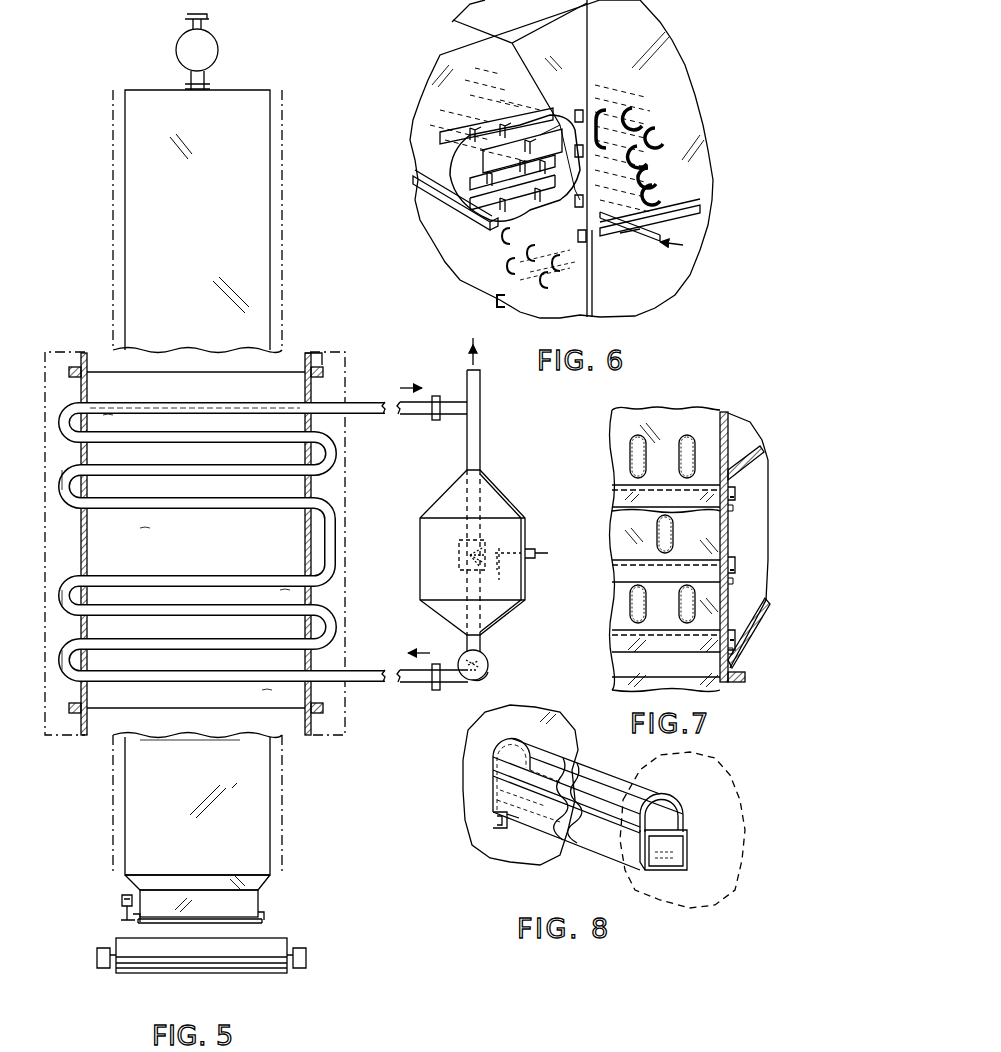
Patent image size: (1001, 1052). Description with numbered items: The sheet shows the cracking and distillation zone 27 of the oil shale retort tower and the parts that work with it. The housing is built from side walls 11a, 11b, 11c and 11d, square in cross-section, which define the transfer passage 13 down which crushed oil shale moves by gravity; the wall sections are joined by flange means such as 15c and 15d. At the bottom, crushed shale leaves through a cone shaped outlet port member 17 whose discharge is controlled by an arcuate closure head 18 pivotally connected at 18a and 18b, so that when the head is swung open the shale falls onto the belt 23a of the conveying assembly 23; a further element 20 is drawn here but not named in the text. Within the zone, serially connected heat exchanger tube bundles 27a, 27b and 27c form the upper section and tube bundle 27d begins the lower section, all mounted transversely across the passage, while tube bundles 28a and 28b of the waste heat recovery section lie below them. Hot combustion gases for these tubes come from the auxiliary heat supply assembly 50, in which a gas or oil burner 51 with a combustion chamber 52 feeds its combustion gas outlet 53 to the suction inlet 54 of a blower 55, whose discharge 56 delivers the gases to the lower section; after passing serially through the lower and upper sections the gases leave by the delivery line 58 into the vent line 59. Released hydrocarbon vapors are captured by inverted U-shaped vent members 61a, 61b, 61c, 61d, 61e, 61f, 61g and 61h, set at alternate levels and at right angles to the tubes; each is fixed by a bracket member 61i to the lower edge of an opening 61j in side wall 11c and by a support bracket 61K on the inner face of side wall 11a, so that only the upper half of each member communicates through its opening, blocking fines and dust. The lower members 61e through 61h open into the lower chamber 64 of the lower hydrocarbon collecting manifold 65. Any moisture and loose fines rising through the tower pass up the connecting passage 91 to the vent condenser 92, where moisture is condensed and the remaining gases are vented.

In FIG. 5, the side wall 11a is at (138, 178).
In FIG. 8, the side wall 11a is at (476, 762).
In FIG. 5, the side wall 11b is at (86, 540).
In FIG. 6, the side wall 11b is at (650, 270).
In FIG. 7, the side wall 11b is at (672, 413).
In FIG. 5, the side wall 11c is at (309, 353).
In FIG. 6, the side wall 11c is at (550, 300).
In FIG. 7, the side wall 11c is at (733, 422).
In FIG. 8, the side wall 11c is at (708, 770).
In FIG. 5, the side wall 11d is at (322, 353).
In FIG. 6, the side wall 11d is at (568, 125).
In FIG. 5, the transfer passage 13 is at (148, 738).
In FIG. 5, the flange means 15c is at (72, 363).
In FIG. 5, the flange means 15d is at (74, 714).
In FIG. 6, the flange means 15d is at (700, 220).
In FIG. 5, the outlet port member 17 is at (244, 904).
In FIG. 5, the closure head 18 is at (202, 922).
In FIG. 5, the pivotal connection 18a is at (128, 920).
In FIG. 5, the pivotal connection 18b is at (264, 917).
In FIG. 5, the clamp 20 is at (110, 912).
In FIG. 5, the conveying assembly 23 is at (282, 935).
In FIG. 5, the belt 23a is at (152, 965).
In FIG. 5, the cracking and distillation zone 27 is at (372, 365).
In FIG. 5, the heat exchanger tube bundle 27a is at (132, 405).
In FIG. 5, the heat exchanger tube bundle 27b is at (63, 484).
In FIG. 5, the heat exchanger tube bundle 27c is at (65, 580).
In FIG. 7, the heat exchanger tube bundle 27c is at (630, 448).
In FIG. 5, the heat exchanger tube bundle 27d is at (63, 676).
In FIG. 6, the heat exchanger tube bundle 27d is at (655, 174).
In FIG. 7, the heat exchanger tube bundle 27d is at (630, 608).
In FIG. 6, the heat exchange tube bundle 28a is at (503, 238).
In FIG. 6, the heat exchange tube bundle 28b is at (506, 282).
In FIG. 5, the auxiliary heat supply assembly 50 is at (500, 482).
In FIG. 5, the gas or oil burner 51 is at (486, 547).
In FIG. 5, the combustion chamber 52 is at (480, 565).
In FIG. 5, the combustion gas outlet 53 is at (500, 630).
In FIG. 5, the suction inlet 54 is at (490, 656).
In FIG. 5, the blower 55 is at (481, 680).
In FIG. 5, the discharge 56 is at (452, 683).
In FIG. 5, the delivery line 58 is at (422, 415).
In FIG. 5, the vent line 59 is at (480, 389).
In FIG. 5, the U-shaped vent member 61a is at (197, 428).
In FIG. 5, the U-shaped vent member 61b is at (197, 460).
In FIG. 5, the U-shaped vent member 61c is at (229, 492).
In FIG. 5, the U-shaped vent member 61d is at (228, 521).
In FIG. 5, the U-shaped vent member 61e is at (174, 591).
In FIG. 6, the U-shaped vent member 61e is at (540, 128).
In FIG. 7, the U-shaped vent member 61e is at (615, 497).
In FIG. 5, the U-shaped vent member 61f is at (178, 623).
In FIG. 6, the U-shaped vent member 61f is at (512, 139).
In FIG. 5, the U-shaped vent member 61g is at (180, 665).
In FIG. 6, the U-shaped vent member 61g is at (490, 178).
In FIG. 7, the U-shaped vent member 61g is at (652, 570).
In FIG. 5, the U-shaped vent member 61h is at (197, 700).
In FIG. 6, the U-shaped vent member 61h is at (512, 206).
In FIG. 7, the U-shaped vent member 61h is at (657, 646).
In FIG. 8, the U-shaped vent member 61h is at (597, 848).
In FIG. 6, the bracket member 61i is at (583, 150).
In FIG. 7, the bracket member 61i is at (734, 516).
In FIG. 8, the bracket member 61i is at (675, 866).
In FIG. 5, the opening 61j is at (191, 412).
In FIG. 6, the opening 61j is at (585, 130).
In FIG. 7, the opening 61j is at (732, 504).
In FIG. 8, the opening 61j is at (668, 814).
In FIG. 8, the support bracket 61K is at (500, 830).
In FIG. 6, the lower chamber 64 is at (528, 158).
In FIG. 7, the lower chamber 64 is at (758, 493).
In FIG. 6, the lower hydrocarbon collecting manifold 65 is at (436, 70).
In FIG. 5, the connecting passage 91 is at (204, 80).
In FIG. 5, the vent condenser 92 is at (215, 48).